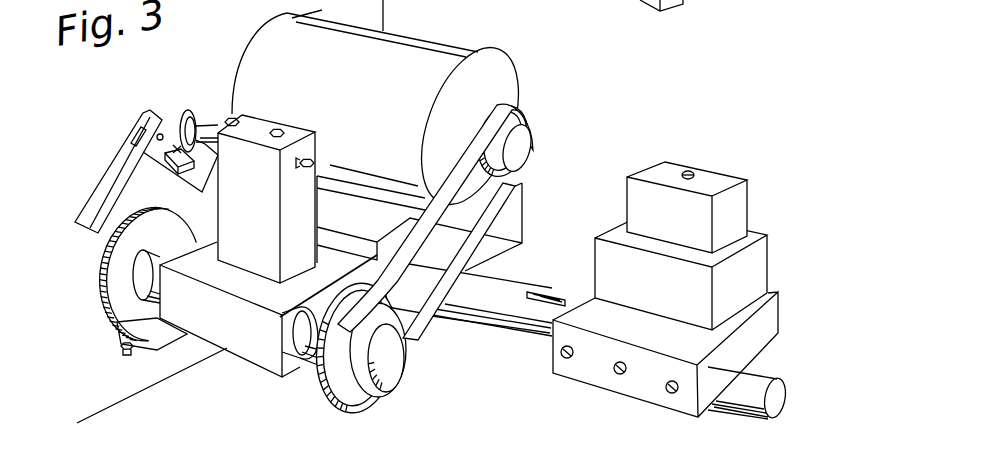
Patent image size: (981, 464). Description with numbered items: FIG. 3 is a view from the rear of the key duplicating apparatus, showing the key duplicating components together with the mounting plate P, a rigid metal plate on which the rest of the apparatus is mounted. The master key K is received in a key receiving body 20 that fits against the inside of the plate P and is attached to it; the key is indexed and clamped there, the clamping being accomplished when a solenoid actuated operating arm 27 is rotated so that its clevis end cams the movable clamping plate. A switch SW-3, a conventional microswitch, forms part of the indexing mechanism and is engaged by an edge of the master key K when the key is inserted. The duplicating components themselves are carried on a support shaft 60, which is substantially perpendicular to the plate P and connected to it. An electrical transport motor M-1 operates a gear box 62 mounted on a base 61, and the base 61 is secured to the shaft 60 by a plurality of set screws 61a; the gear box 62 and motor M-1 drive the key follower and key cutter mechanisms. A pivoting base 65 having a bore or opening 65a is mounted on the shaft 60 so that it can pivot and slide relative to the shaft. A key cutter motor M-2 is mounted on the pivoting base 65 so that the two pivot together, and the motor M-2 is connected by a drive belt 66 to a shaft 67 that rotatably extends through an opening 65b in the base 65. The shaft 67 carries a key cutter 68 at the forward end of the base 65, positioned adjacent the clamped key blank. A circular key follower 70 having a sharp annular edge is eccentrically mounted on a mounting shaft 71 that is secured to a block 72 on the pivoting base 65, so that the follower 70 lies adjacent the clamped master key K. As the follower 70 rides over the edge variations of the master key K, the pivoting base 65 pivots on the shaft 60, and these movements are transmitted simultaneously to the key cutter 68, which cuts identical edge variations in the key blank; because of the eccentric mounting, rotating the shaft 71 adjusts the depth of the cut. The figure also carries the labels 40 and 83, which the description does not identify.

The mounting plate P is at (66, 311).
The solenoid actuated operating arm 27 is at (115, 172).
The switch SW-3 is at (165, 156).
The key receiving body 20 is at (203, 180).
The key cutter 68 is at (100, 264).
The bracket 40 is at (173, 334).
The key follower 70 is at (188, 110).
The mounting shaft 71 is at (217, 125).
The master key K is at (176, 143).
The block 72 is at (258, 218).
The key cutter motor M-2 is at (350, 77).
The bore or opening 65a is at (404, 240).
The pivoting base 65 is at (210, 320).
The opening 65b is at (293, 328).
The shaft 67 is at (308, 368).
The drive belt 66 is at (420, 330).
The drive belt 83 is at (550, 292).
The support shaft 60 is at (487, 323).
The base 61 is at (758, 342).
The set screws 61a is at (672, 394).
The gear box 62 is at (660, 294).
The electrical transport motor M-1 is at (684, 229).